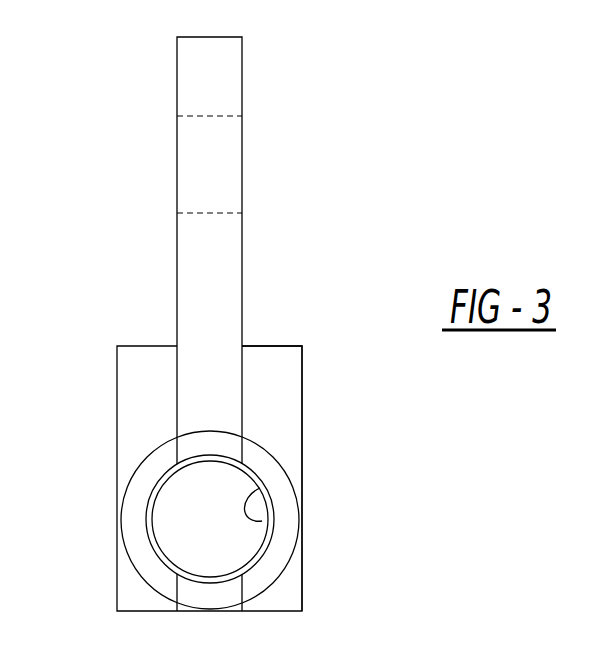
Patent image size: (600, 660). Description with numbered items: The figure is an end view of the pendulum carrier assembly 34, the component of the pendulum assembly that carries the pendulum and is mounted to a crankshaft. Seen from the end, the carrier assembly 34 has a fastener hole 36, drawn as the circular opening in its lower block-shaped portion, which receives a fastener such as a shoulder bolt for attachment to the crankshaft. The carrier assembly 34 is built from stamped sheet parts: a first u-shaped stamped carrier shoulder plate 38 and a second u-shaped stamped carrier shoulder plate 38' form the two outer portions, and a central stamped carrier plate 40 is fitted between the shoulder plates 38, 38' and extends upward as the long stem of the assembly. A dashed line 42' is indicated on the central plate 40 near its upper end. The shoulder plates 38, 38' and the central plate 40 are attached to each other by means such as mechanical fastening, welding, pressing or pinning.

The pendulum carrier assembly 34 is at (133, 287).
The fastener hole 36 is at (262, 521).
The first u-shaped stamped carrier shoulder plate 38 is at (162, 478).
The second u-shaped stamped carrier shoulder plate 38' is at (311, 461).
The central stamped carrier plate 40 is at (213, 75).
The stem segment 42' is at (266, 164).